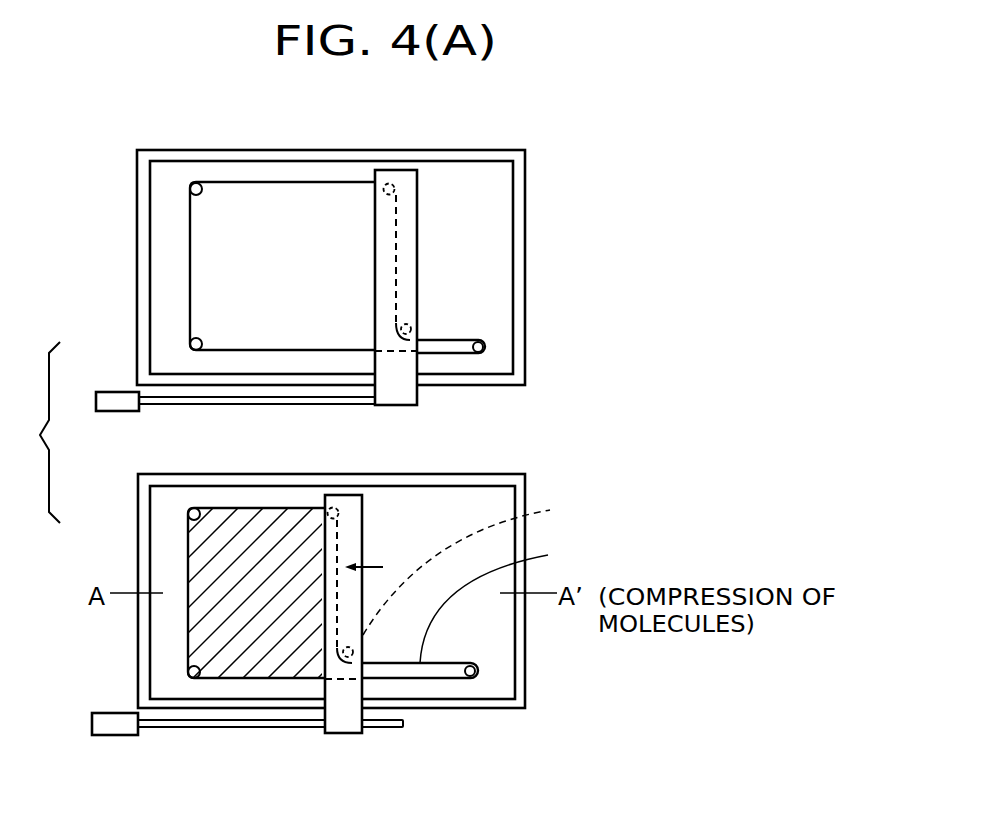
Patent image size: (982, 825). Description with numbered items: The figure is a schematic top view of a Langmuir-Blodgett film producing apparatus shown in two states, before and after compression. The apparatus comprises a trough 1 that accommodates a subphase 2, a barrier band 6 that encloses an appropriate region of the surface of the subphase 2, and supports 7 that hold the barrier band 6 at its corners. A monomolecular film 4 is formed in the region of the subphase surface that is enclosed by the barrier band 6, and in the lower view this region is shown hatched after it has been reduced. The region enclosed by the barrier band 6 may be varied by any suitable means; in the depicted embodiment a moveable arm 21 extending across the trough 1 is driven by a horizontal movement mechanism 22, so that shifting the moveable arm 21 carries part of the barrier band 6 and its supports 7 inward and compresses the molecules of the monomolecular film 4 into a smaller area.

The trough 1 is at (525, 192).
The subphase 2 is at (478, 172).
The monomolecular film 4 is at (207, 623).
The barrier band 6 is at (320, 181).
The supports 7 is at (195, 508).
The moveable arm 21 is at (418, 263).
The horizontal movement mechanism 22 is at (127, 412).